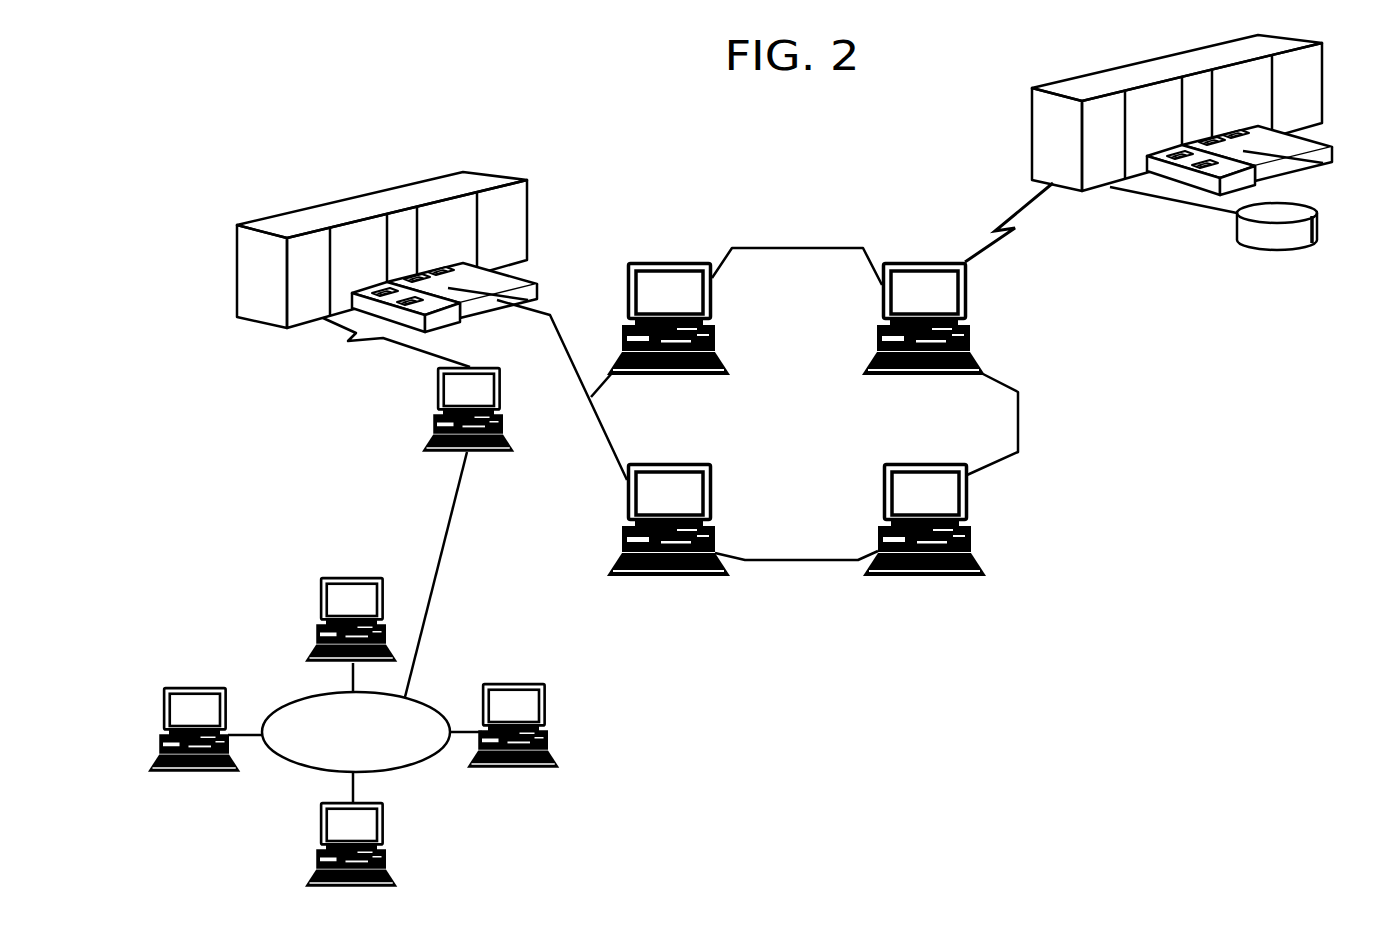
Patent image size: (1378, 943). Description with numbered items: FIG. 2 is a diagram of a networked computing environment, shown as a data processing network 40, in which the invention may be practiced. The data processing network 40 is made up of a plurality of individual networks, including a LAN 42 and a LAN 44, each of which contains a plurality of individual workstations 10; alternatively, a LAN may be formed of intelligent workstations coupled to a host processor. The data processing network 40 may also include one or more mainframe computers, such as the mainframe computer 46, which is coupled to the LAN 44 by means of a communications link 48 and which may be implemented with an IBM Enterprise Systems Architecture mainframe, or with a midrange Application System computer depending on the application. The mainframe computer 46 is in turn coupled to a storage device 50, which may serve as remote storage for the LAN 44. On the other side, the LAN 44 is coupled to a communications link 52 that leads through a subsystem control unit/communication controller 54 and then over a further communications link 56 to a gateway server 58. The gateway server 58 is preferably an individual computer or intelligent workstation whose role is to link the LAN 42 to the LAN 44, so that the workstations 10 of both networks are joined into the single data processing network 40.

The workstation 10 is at (662, 262).
The data processing network 40 is at (814, 228).
The LAN 42 is at (355, 744).
The LAN 44 is at (804, 404).
The mainframe computer 46 is at (1100, 72).
The communications link 48 is at (1022, 203).
The storage device 50 is at (1320, 215).
The communications link 52 is at (563, 336).
The subsystem control unit/communication controller 54 is at (390, 187).
The communications link 56 is at (360, 336).
The gateway server 58 is at (503, 380).